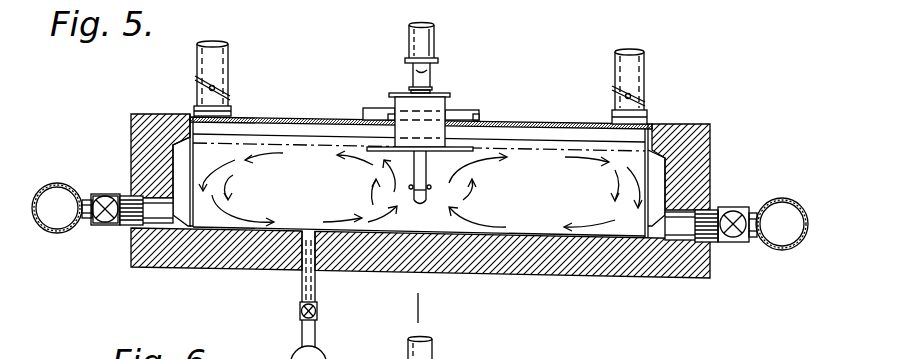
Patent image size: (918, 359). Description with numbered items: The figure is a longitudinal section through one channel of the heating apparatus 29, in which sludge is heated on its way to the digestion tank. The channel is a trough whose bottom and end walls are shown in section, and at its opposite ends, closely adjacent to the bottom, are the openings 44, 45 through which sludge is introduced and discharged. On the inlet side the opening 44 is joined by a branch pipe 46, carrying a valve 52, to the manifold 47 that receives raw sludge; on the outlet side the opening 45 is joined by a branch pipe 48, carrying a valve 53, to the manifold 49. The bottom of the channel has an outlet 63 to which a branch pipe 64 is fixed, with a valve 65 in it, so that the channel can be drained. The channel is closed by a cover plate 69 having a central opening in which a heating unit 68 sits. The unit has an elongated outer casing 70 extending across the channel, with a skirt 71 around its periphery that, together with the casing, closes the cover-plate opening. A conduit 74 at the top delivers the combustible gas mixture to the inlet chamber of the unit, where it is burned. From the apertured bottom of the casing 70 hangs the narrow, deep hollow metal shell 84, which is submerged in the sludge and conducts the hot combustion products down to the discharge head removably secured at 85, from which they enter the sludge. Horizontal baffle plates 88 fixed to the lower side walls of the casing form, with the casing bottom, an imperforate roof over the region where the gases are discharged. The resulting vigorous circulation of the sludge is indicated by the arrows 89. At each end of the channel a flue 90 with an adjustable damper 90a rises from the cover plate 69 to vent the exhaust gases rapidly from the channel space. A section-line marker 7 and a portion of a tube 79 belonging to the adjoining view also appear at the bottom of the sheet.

In FIG. 5, the heating apparatus 29 is at (130, 105).
In FIG. 5, the cover plate 69 is at (272, 117).
In FIG. 5, the outer casing 70 is at (378, 128).
In FIG. 5, the skirt 71 is at (374, 108).
In FIG. 5, the conduit 74 is at (434, 38).
In FIG. 5, the heating unit 68 is at (458, 91).
In FIG. 5, the baffle plate 88 is at (447, 140).
In FIG. 5, the hollow metal shell 84 is at (413, 174).
In FIG. 5, the removable securing connection 85 is at (428, 185).
In FIG. 5, the arrows 89 is at (232, 188).
In FIG. 5, the flue 90 is at (228, 58).
In FIG. 5, the adjustable damper 90a is at (196, 85).
In FIG. 5, the manifold 47 is at (48, 184).
In FIG. 5, the branch pipe 46 is at (84, 194).
In FIG. 5, the valve 52 is at (100, 226).
In FIG. 5, the opening 44 is at (142, 224).
In FIG. 5, the opening 45 is at (689, 230).
In FIG. 5, the valve 53 is at (736, 242).
In FIG. 5, the branch pipe 48 is at (755, 207).
In FIG. 5, the manifold 49 is at (779, 250).
In FIG. 5, the outlet 63 is at (304, 250).
In FIG. 5, the branch pipe 64 is at (316, 292).
In FIG. 5, the valve 65 is at (300, 313).
In FIG. 5, the section line 7 is at (421, 305).
In FIG. 6, the tube 79 is at (407, 352).